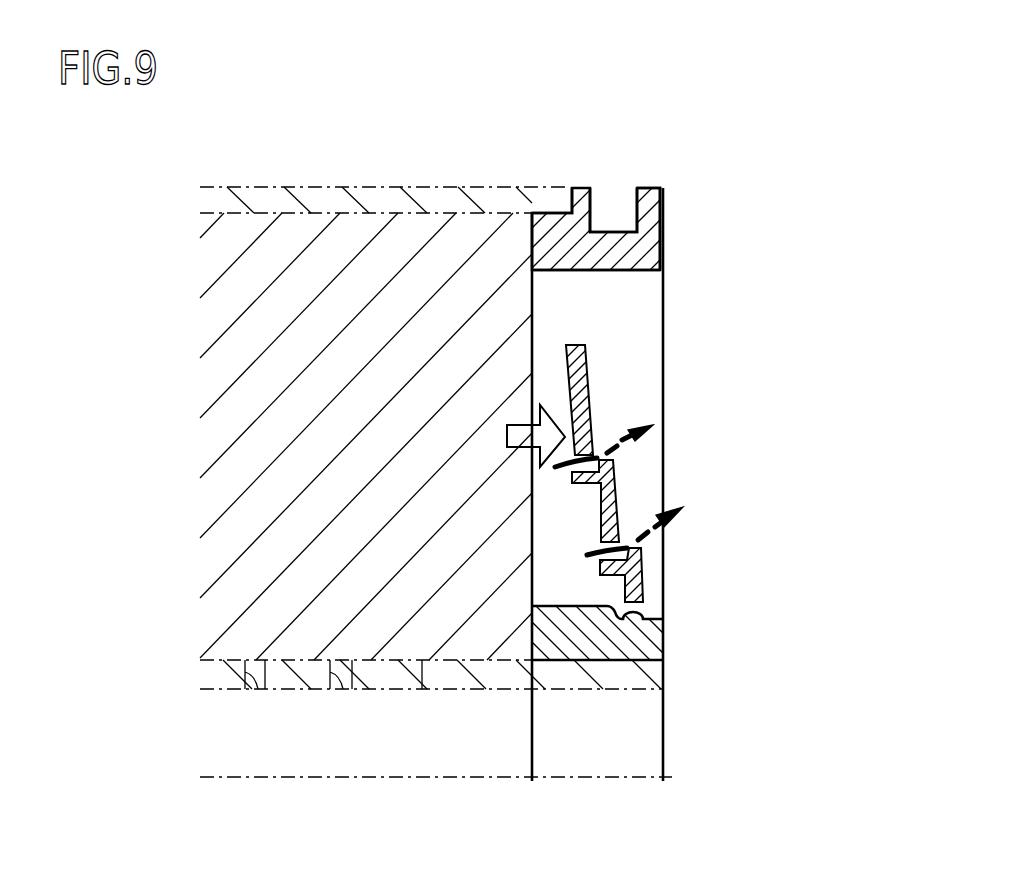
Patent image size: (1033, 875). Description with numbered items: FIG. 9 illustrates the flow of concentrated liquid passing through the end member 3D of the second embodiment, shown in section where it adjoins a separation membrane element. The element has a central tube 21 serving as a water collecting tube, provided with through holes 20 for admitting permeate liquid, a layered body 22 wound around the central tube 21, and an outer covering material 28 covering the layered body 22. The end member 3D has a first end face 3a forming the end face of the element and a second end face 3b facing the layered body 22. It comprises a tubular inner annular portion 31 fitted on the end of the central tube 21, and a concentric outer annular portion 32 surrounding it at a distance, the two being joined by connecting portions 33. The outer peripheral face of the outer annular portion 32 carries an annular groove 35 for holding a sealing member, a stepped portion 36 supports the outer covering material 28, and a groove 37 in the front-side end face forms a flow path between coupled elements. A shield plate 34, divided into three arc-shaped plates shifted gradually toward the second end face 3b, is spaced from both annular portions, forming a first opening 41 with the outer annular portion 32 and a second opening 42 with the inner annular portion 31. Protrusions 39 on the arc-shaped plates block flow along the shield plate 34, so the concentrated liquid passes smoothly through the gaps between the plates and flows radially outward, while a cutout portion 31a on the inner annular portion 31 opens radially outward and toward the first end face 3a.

The end member 3D is at (766, 137).
The first end face 3a is at (663, 362).
The second end face 3b is at (532, 340).
The through holes 20 is at (343, 690).
The central tube 21 is at (422, 689).
The layered body 22 is at (245, 423).
The outer covering material 28 is at (385, 203).
The inner annular portion 31 is at (643, 643).
The cutout portion 31a is at (623, 618).
The outer annular portion 32 is at (650, 200).
The connecting portions 33 is at (633, 350).
The shield plate 34 is at (607, 472).
The annular groove 35 is at (615, 223).
The stepped portion 36 is at (551, 212).
The groove 37 is at (660, 222).
The protrusion 39 is at (627, 573).
The first opening 41 is at (603, 309).
The second opening 42 is at (664, 613).